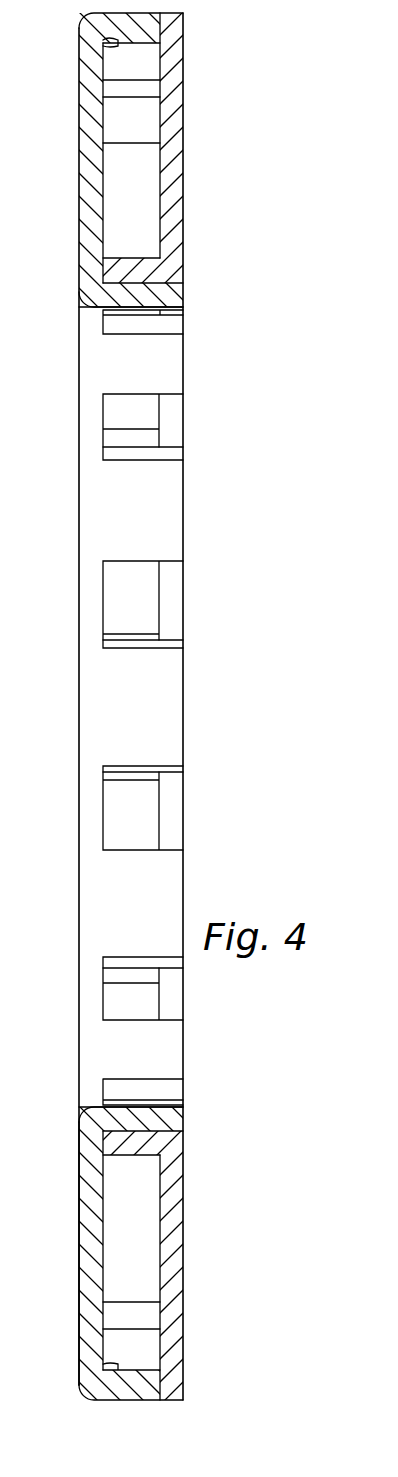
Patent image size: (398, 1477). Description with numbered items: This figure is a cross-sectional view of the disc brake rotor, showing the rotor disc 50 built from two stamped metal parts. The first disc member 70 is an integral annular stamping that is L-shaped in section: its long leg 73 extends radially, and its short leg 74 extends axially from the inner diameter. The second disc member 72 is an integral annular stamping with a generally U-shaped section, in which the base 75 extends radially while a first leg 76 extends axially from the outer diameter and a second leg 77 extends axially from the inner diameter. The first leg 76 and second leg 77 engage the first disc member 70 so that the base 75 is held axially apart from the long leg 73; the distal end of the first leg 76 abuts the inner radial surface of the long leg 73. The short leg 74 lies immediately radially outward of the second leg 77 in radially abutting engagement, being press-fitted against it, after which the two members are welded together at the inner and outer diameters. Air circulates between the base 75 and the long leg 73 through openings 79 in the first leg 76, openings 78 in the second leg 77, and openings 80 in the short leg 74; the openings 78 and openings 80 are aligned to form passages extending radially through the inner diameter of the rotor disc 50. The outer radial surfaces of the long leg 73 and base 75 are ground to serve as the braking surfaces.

The rotor disc 50 is at (160, 23).
The first disc member 70 is at (184, 130).
The second disc member 72 is at (78, 137).
The long leg 73 is at (175, 172).
The short leg 74 is at (128, 268).
The base 75 is at (87, 1248).
The first leg 76 is at (100, 44).
The second leg 77 is at (185, 293).
The openings 78 is at (175, 455).
The openings 79 is at (150, 88).
The openings 80 is at (105, 436).